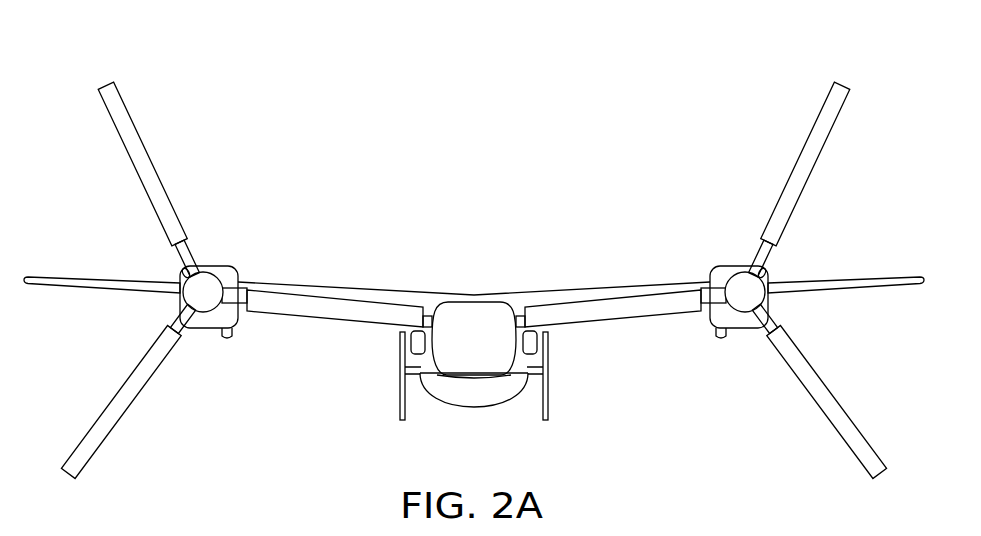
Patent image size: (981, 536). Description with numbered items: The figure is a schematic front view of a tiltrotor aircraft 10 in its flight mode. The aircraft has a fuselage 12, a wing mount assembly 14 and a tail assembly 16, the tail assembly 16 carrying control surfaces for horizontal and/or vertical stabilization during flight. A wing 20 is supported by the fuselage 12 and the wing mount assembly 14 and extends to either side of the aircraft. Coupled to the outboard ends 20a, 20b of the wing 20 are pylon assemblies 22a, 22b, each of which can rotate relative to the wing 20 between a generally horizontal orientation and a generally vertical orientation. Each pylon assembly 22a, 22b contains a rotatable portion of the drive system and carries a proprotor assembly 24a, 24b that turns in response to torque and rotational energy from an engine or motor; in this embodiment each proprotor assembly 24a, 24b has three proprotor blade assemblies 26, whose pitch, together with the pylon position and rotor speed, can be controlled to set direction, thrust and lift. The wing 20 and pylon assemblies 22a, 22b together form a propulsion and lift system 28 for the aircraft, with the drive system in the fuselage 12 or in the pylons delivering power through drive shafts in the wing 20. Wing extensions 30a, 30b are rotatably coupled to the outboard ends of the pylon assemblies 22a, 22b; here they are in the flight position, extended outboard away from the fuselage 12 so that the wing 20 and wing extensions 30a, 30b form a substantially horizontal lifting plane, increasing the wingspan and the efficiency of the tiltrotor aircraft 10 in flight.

The tiltrotor aircraft 10 is at (310, 61).
The fuselage 12 is at (473, 408).
The wing mount assembly 14 is at (473, 309).
The tail assembly 16 is at (546, 405).
The wing 20 is at (405, 290).
The outboard end of wing 20a is at (700, 283).
The outboard end of wing 20b is at (247, 283).
The pylon assembly 22a is at (741, 338).
The pylon assembly 22b is at (207, 338).
The proprotor assembly 24a is at (740, 287).
The proprotor assembly 24b is at (207, 286).
The proprotor blade assembly 26 is at (152, 142).
The propulsion and lift system 28 is at (531, 283).
The wing extension 30a is at (874, 278).
The wing extension 30b is at (73, 277).